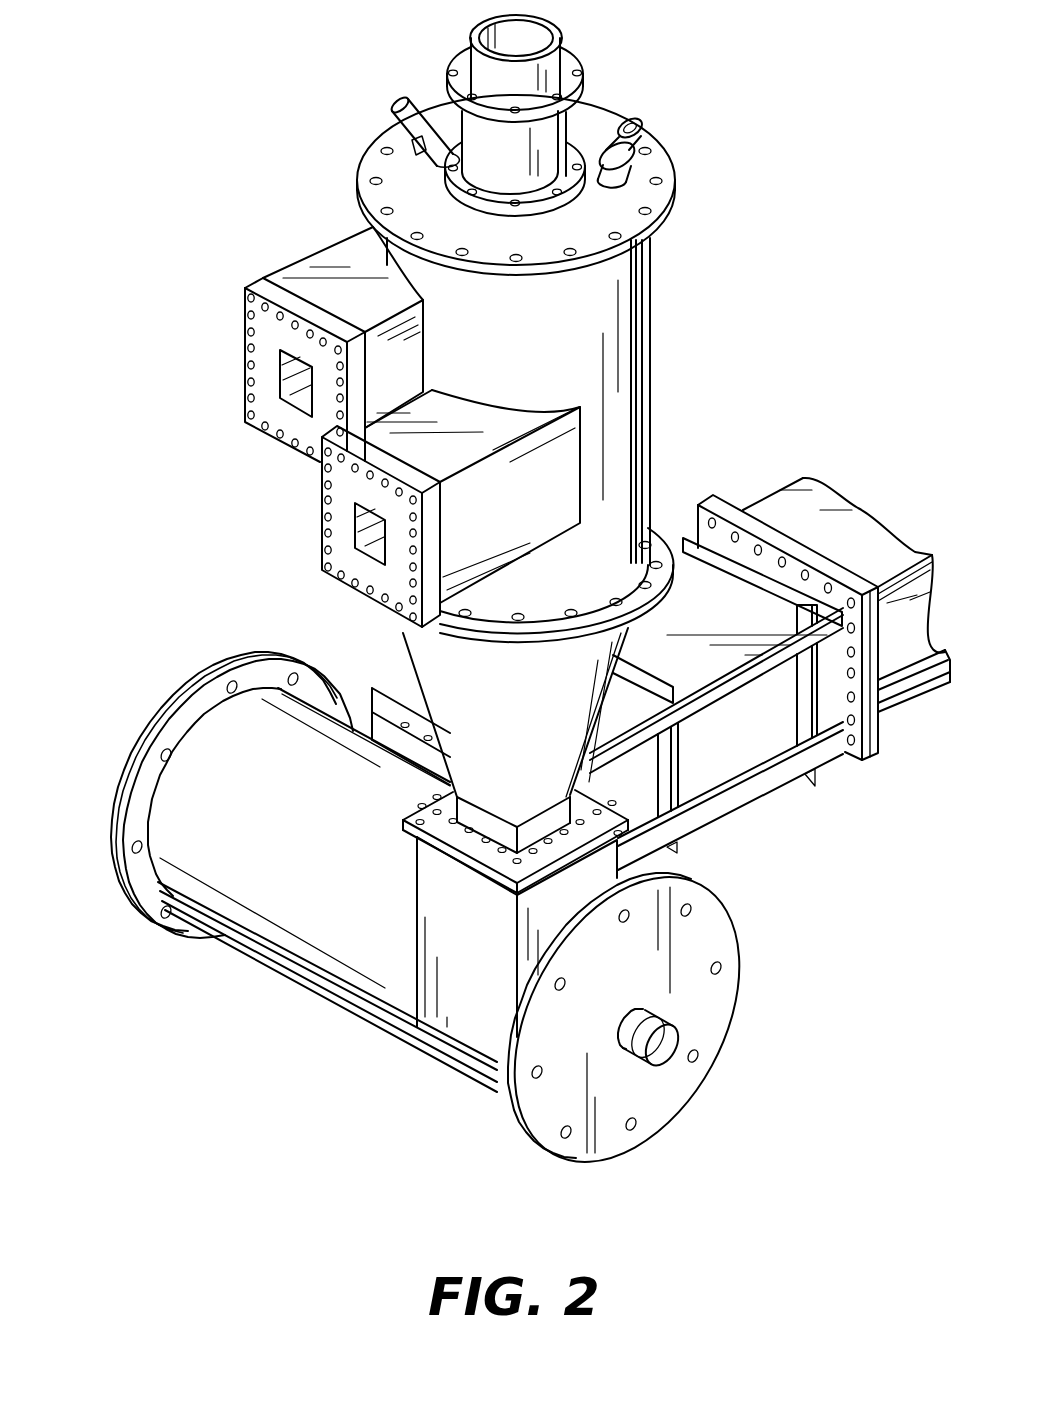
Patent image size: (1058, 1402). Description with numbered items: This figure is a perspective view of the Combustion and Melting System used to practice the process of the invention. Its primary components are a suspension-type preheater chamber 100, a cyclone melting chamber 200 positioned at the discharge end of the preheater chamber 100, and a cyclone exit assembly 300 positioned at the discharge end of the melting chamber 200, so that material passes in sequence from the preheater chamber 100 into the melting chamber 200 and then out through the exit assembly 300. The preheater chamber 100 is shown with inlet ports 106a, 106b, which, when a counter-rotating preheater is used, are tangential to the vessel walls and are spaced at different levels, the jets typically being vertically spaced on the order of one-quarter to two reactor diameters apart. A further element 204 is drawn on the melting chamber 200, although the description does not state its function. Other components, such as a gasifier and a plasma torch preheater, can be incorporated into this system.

The suspension-type preheater chamber 100 is at (685, 328).
The inlet port 106a is at (340, 518).
The inlet port 106b is at (268, 352).
The cyclone melting chamber 200 is at (245, 1012).
The square inlet duct of vessel 204 is at (453, 967).
The cyclone exit assembly 300 is at (785, 842).